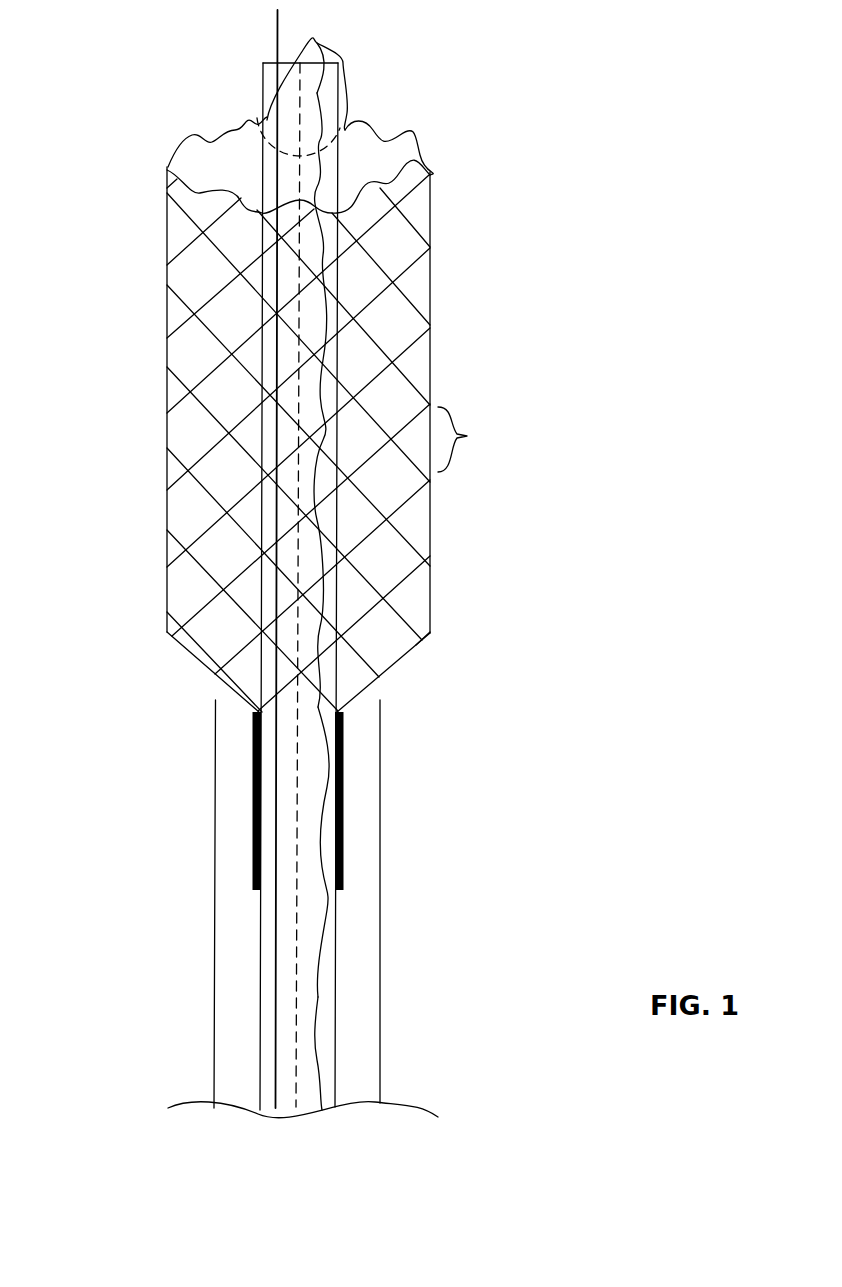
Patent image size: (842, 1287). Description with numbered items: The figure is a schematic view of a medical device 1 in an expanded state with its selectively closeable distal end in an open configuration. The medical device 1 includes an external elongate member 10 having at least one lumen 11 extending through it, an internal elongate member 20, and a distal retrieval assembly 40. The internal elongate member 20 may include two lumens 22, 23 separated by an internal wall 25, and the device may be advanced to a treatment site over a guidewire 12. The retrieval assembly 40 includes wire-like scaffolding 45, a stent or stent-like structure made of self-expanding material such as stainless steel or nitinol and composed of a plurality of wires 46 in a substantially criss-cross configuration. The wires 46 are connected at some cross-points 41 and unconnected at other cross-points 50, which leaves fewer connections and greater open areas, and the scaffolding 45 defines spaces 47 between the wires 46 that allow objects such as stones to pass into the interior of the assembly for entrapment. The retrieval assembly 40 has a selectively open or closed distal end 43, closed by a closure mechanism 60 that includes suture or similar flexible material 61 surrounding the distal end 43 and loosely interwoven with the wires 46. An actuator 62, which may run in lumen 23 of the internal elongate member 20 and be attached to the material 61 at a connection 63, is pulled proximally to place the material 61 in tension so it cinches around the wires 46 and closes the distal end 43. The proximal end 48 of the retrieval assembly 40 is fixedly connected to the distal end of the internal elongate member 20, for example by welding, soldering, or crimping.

The medical device 1 is at (464, 627).
The external elongate member 10 is at (395, 868).
The lumen 11 is at (233, 704).
The guidewire 12 is at (268, 37).
The internal elongate member 20 is at (357, 983).
The lumen 22 is at (284, 1106).
The lumen 23 is at (310, 1106).
The internal wall 25 is at (286, 1002).
The distal retrieval assembly 40 is at (450, 523).
The connected cross-points 41 is at (400, 367).
The distal end 43 is at (168, 165).
The wire-like scaffolding 45 is at (472, 439).
The wires 46 is at (417, 229).
The spaces 47 is at (410, 330).
The proximal end 48 is at (250, 793).
The unconnected cross-points 50 is at (205, 594).
The closure mechanism 60 is at (360, 88).
The flexible material 61 is at (426, 140).
The actuator 62 is at (336, 256).
The connection 63 is at (335, 43).